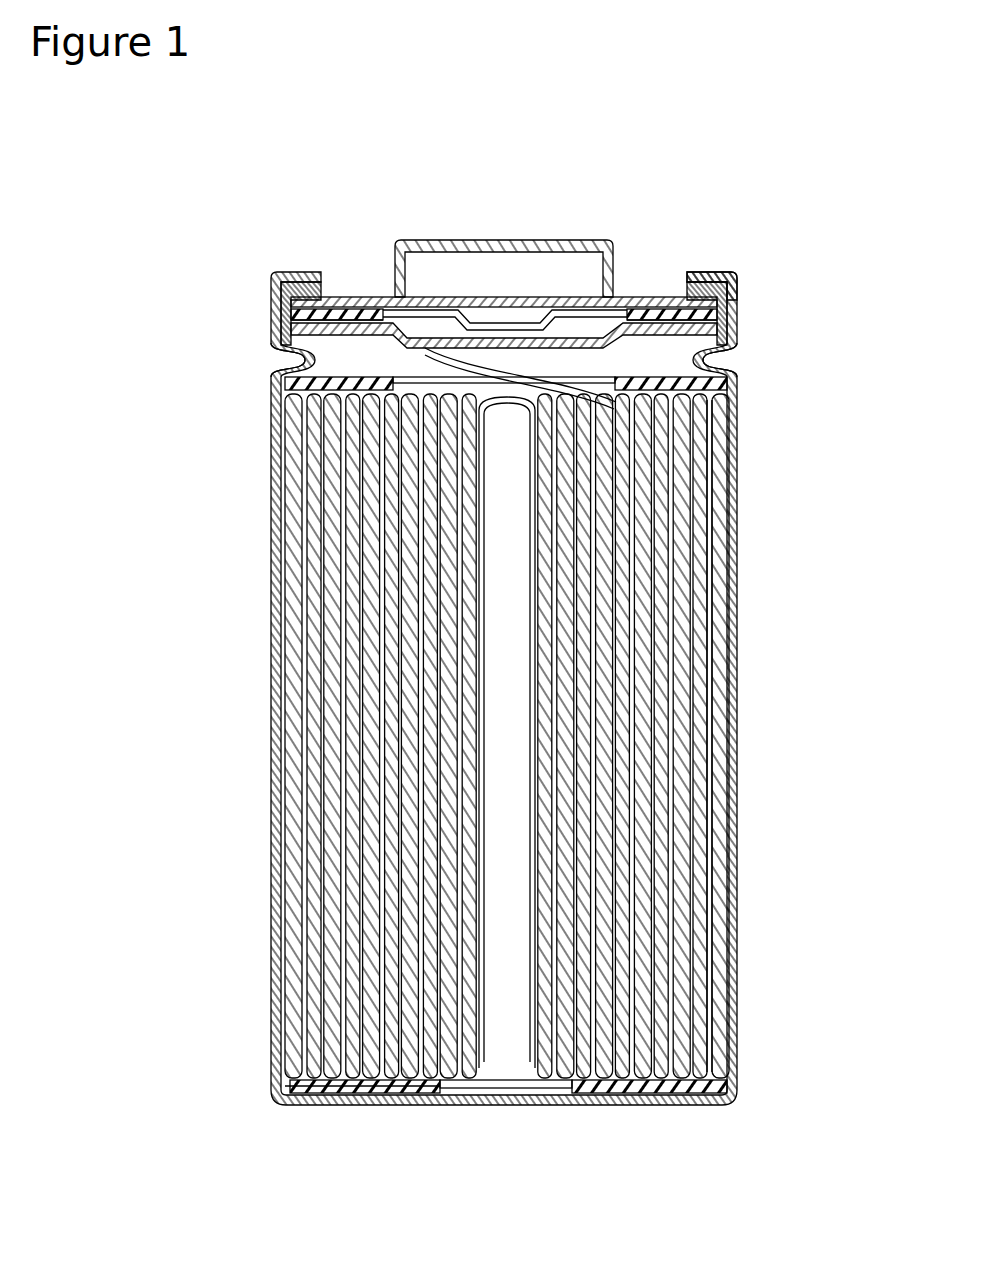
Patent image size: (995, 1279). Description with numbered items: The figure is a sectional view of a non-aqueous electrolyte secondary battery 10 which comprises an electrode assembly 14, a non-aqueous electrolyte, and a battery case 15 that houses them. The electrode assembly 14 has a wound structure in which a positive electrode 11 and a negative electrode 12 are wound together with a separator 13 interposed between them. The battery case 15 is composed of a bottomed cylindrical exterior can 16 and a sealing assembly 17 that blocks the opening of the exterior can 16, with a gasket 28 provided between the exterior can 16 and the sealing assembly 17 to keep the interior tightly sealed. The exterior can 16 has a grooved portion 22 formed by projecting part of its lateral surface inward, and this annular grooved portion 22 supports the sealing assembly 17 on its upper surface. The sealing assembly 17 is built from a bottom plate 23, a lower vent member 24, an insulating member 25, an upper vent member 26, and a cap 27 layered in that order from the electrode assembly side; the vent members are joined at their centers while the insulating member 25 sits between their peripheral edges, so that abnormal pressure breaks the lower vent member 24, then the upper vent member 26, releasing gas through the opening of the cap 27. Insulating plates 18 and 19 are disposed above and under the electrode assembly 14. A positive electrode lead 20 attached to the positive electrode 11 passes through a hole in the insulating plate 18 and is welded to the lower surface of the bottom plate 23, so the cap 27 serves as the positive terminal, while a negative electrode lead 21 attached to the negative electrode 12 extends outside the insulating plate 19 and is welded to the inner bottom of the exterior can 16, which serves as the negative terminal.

The non-aqueous electrolyte secondary battery 10 is at (752, 118).
The positive electrode 11 is at (740, 800).
The negative electrode 12 is at (740, 827).
The separator 13 is at (740, 855).
The electrode assembly 14 is at (827, 785).
The battery case 15 is at (720, 191).
The exterior can 16 is at (707, 275).
The sealing assembly 17 is at (636, 297).
The insulating plate 18 is at (730, 390).
The insulating plate 19 is at (740, 1085).
The positive electrode lead 20 is at (277, 342).
The negative electrode lead 21 is at (283, 1085).
The grooved portion 22 is at (280, 362).
The bottom plate 23 is at (505, 340).
The lower vent member 24 is at (410, 308).
The insulating member 25 is at (352, 298).
The upper vent member 26 is at (433, 322).
The cap 27 is at (573, 240).
The gasket 28 is at (740, 288).